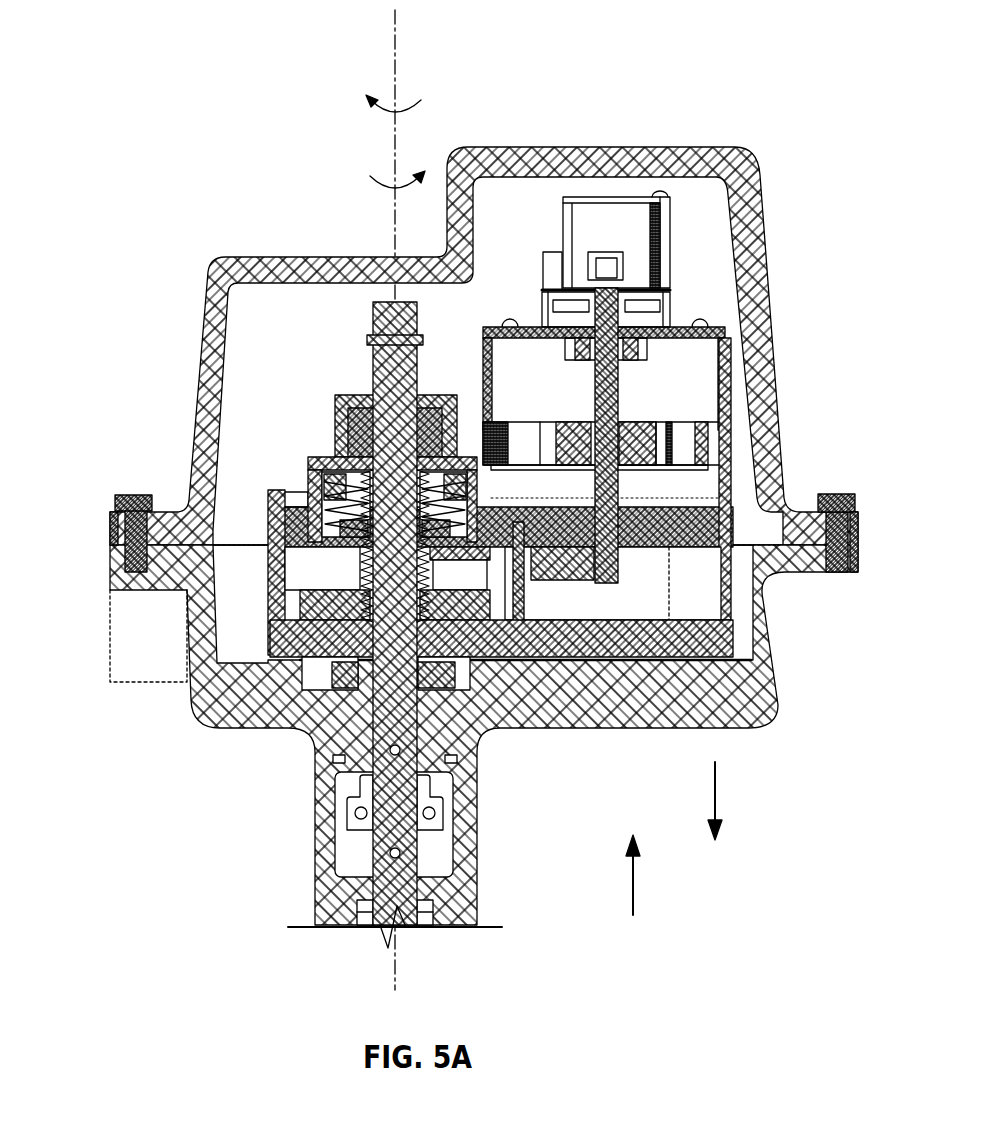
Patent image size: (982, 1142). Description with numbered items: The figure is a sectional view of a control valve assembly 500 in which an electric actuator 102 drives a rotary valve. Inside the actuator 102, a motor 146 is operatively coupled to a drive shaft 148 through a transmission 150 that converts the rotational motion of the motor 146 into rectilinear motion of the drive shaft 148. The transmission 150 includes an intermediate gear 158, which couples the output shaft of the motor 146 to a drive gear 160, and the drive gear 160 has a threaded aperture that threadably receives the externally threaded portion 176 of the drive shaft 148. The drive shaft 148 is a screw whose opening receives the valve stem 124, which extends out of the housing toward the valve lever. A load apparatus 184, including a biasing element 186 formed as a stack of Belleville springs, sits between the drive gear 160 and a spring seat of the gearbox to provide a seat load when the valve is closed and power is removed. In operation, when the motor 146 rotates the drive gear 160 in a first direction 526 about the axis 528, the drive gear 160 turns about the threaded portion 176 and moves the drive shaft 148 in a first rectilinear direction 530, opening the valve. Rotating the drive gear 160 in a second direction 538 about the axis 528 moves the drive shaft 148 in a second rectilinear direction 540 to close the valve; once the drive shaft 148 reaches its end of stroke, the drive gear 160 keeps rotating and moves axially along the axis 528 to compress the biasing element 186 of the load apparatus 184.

The control valve assembly 500 is at (462, 500).
The actuator 102 is at (790, 294).
The valve stem 124 is at (387, 865).
The motor 146 is at (616, 196).
The drive shaft 148 is at (372, 362).
The transmission 150 is at (694, 597).
The intermediate gear 158 is at (558, 600).
The drive gear 160 is at (298, 605).
The externally threaded portion 176 is at (336, 476).
The load apparatus 184 is at (360, 470).
The biasing element 186 is at (326, 510).
The first direction 526 is at (381, 112).
The axis 528 is at (397, 43).
The first rectilinear direction 530 is at (634, 890).
The second direction 538 is at (376, 186).
The second rectilinear direction 540 is at (716, 793).